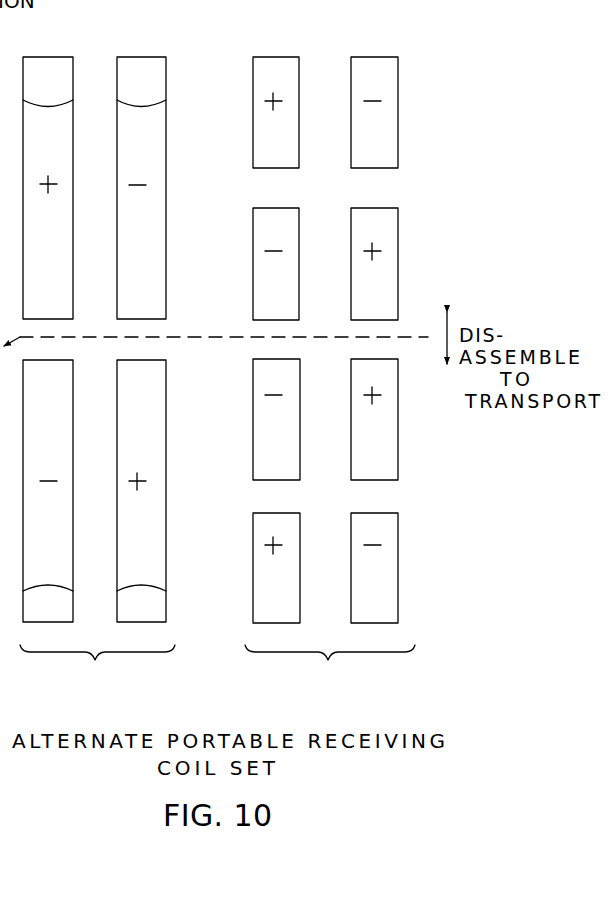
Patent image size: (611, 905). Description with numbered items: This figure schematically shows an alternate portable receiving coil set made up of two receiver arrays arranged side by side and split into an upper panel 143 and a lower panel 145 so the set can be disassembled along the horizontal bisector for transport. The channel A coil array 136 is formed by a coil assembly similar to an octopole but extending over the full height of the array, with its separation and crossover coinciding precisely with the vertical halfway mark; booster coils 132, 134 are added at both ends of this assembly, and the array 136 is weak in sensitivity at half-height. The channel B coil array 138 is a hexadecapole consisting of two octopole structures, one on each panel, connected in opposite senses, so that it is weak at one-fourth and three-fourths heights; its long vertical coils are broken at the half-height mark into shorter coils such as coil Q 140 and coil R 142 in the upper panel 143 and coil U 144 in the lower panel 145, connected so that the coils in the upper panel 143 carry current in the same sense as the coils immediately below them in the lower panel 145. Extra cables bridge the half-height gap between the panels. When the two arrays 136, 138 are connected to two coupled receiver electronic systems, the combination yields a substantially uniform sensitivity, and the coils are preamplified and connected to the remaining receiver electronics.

The booster coil 132 is at (115, 80).
The booster coil 134 is at (73, 603).
The channel A coil array 136 is at (97, 365).
The channel B coil array 138 is at (334, 358).
The coil Q 140 is at (271, 54).
The coil R 142 is at (390, 85).
The upper panel 143 is at (365, 167).
The coil U 144 is at (249, 424).
The lower panel 145 is at (334, 495).